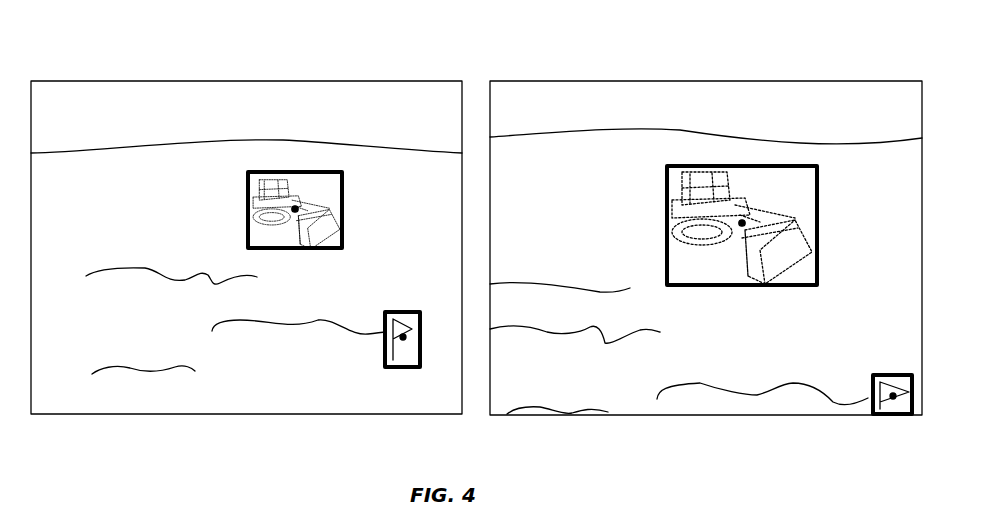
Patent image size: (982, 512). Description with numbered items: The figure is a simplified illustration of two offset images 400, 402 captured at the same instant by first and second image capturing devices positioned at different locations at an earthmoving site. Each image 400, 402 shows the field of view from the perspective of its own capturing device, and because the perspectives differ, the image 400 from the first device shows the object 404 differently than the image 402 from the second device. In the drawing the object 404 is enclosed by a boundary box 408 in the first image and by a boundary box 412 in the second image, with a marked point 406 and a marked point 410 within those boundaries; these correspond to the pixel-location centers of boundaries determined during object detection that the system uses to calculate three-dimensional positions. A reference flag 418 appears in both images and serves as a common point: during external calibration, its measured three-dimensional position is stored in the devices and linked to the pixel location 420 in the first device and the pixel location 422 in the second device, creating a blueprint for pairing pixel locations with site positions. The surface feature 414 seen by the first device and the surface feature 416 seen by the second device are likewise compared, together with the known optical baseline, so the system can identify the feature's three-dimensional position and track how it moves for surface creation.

The image 400 is at (148, 80).
The image 402 is at (566, 80).
The object 404 is at (263, 197).
The first reference point 406 is at (295, 209).
The first bounding box 408 is at (302, 172).
The second reference point 410 is at (742, 223).
The second bounding box 412 is at (747, 166).
The surface feature 414 is at (128, 270).
The surface feature 416 is at (553, 327).
The reference flag 418 is at (386, 336).
The pixel location 420 is at (403, 337).
The pixel location 422 is at (893, 396).